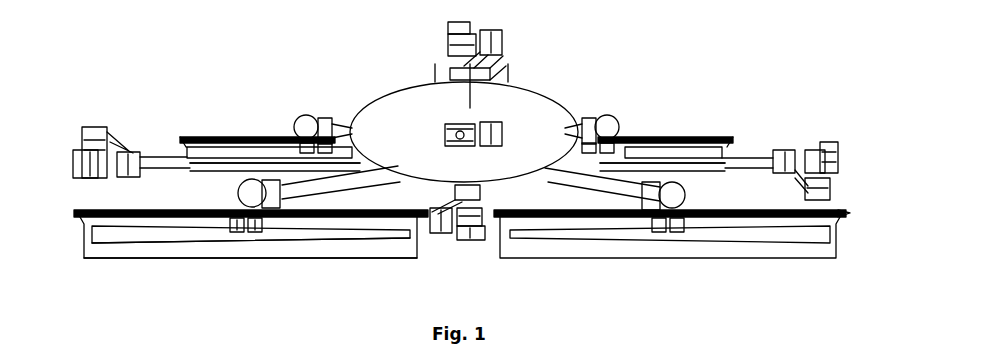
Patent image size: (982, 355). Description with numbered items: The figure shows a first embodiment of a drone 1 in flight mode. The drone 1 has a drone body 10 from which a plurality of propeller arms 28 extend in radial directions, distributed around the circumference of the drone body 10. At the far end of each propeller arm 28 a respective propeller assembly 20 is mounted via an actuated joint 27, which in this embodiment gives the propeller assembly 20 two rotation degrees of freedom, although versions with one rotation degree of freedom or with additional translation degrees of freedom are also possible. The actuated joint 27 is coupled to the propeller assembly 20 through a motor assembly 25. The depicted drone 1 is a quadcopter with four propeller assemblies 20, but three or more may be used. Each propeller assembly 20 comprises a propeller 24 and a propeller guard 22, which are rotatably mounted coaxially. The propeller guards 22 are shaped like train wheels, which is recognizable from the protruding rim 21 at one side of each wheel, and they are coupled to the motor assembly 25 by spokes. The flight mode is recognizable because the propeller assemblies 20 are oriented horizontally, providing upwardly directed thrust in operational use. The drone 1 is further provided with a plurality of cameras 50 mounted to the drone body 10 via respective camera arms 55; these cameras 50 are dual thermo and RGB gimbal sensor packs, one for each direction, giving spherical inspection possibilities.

The drone 1 is at (142, 97).
The drone body 10 is at (540, 108).
The propeller assembly 20 is at (231, 137).
The protruding rim 21 is at (846, 212).
The propeller guard 22 is at (190, 252).
The propeller 24 is at (205, 236).
The motor assembly 25 is at (248, 232).
The actuated joint 27 is at (264, 202).
The propeller arm 28 is at (345, 186).
The camera 50 is at (85, 160).
The camera arm 55 is at (262, 165).